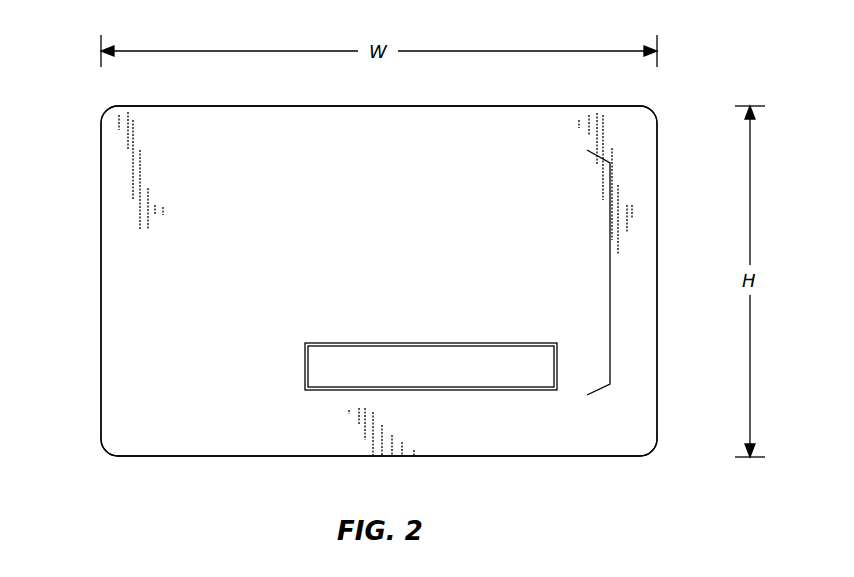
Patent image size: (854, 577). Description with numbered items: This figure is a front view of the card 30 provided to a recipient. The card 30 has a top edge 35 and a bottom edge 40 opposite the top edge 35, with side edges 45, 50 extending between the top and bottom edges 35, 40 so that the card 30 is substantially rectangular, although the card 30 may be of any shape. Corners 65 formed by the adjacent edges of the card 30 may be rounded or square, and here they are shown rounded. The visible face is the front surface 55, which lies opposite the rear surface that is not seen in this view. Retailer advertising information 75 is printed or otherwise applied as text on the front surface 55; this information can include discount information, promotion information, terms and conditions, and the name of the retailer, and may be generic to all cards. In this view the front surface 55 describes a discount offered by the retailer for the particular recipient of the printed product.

The card 30 is at (693, 101).
The top edge 35 is at (401, 106).
The bottom edge 40 is at (224, 457).
The side edge 45 is at (101, 217).
The side edge 50 is at (658, 213).
The front surface 55 is at (153, 318).
The corners 65 is at (107, 113).
The retailer advertising information 75 is at (611, 273).